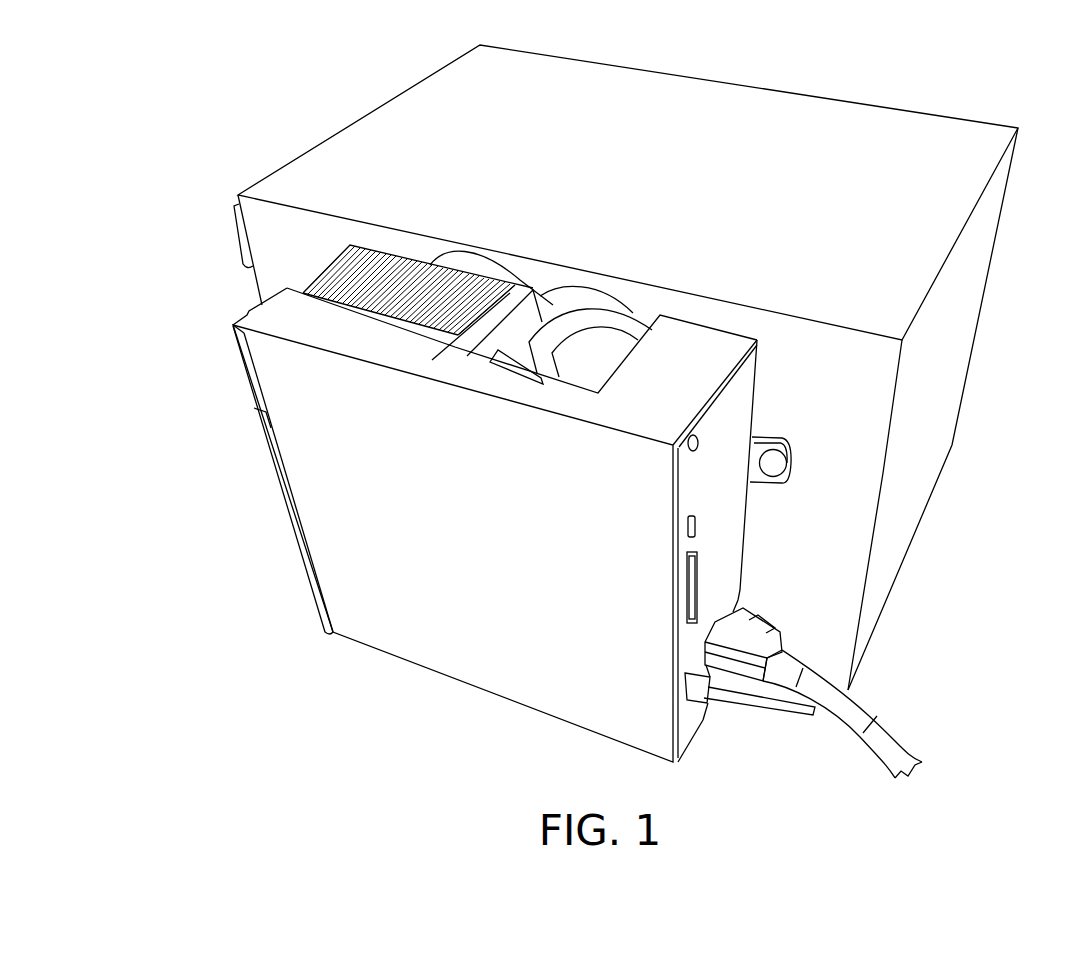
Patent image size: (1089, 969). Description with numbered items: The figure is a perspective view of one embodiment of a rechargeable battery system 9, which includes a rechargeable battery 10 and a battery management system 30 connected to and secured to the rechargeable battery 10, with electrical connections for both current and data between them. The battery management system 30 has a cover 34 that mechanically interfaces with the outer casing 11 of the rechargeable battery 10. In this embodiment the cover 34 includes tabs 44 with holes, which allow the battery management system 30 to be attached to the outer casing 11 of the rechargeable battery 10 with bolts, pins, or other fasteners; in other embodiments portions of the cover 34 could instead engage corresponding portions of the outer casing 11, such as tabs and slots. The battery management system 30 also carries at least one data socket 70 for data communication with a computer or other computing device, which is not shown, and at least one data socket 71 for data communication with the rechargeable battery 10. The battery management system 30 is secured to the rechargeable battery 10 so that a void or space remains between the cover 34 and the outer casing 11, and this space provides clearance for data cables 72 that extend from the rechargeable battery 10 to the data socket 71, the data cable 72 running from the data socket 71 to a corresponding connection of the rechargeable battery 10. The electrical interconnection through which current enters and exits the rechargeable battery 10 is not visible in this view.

The rechargeable battery system 9 is at (205, 115).
The rechargeable battery 10 is at (958, 316).
The outer casing 11 is at (883, 473).
The battery management system 30 is at (328, 523).
The cover 34 is at (308, 452).
The tabs 44 is at (790, 465).
The data socket 70 is at (743, 627).
The data socket 71 is at (533, 363).
The data cables 72 is at (580, 303).